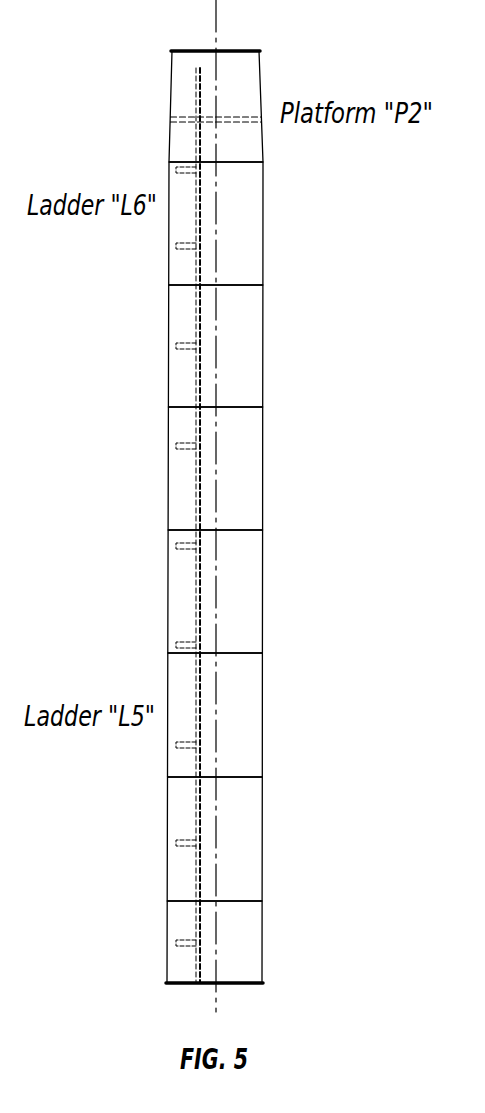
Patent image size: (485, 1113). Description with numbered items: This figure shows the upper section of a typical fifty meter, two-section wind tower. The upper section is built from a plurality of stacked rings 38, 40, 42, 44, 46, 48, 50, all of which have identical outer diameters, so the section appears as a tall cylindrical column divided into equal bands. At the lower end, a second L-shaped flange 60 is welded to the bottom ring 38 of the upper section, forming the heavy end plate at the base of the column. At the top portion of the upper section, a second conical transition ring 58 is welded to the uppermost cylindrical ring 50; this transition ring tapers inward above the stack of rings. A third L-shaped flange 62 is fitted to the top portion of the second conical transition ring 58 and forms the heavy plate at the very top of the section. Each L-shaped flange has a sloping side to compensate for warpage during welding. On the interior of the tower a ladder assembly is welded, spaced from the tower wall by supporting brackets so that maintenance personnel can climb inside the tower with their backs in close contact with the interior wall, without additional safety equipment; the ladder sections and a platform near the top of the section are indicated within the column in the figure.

The bottom ring 38 is at (262, 944).
The ring 40 is at (262, 843).
The ring 42 is at (262, 719).
The ring 44 is at (262, 594).
The ring 46 is at (263, 471).
The ring 48 is at (263, 348).
The cylindrical ring 50 is at (263, 223).
The second conical transition ring 58 is at (170, 108).
The second L-shaped flange 60 is at (245, 985).
The third L-shaped flange 62 is at (242, 51).